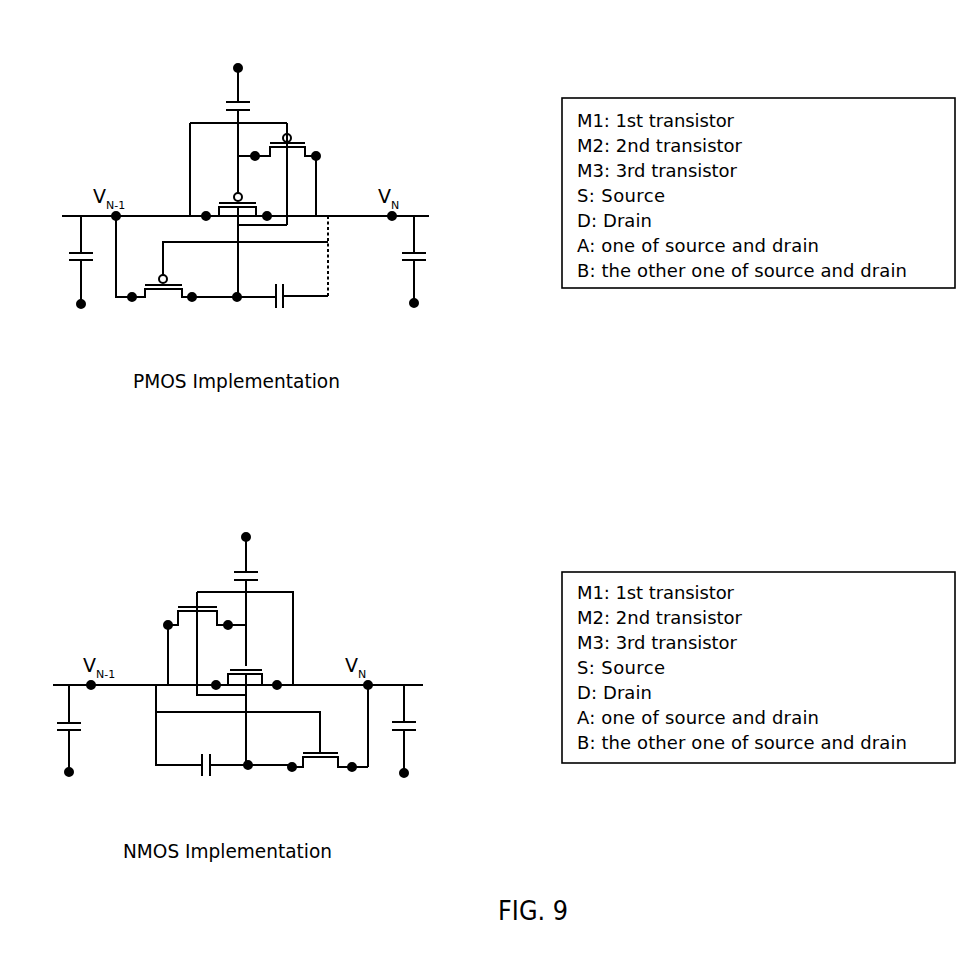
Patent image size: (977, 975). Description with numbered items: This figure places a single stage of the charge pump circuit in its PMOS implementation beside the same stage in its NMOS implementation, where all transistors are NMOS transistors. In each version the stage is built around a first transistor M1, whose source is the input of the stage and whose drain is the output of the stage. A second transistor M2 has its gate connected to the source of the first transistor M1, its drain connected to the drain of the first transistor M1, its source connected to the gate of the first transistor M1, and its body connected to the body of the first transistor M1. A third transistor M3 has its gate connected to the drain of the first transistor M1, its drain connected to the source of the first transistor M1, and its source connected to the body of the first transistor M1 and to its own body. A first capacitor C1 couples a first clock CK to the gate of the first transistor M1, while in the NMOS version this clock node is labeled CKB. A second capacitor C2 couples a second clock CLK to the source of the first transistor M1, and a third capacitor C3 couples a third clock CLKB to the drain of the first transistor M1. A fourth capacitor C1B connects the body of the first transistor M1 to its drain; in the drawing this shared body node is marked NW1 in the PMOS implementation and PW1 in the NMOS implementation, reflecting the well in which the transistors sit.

The first transistor M1 is at (245, 429).
The second transistor M2 is at (247, 370).
The third transistor M3 is at (247, 536).
The first capacitor C1 is at (228, 330).
The second capacitor C2 is at (241, 494).
The third capacitor C3 is at (241, 494).
The fourth capacitor C1B is at (241, 547).
The N-well node NW1 is at (232, 309).
The P-well node PW1 is at (256, 776).
The first clock CK is at (237, 71).
The inverted clock input CKB is at (244, 540).
The second clock CLK is at (68, 552).
The third clock CLKB is at (416, 551).